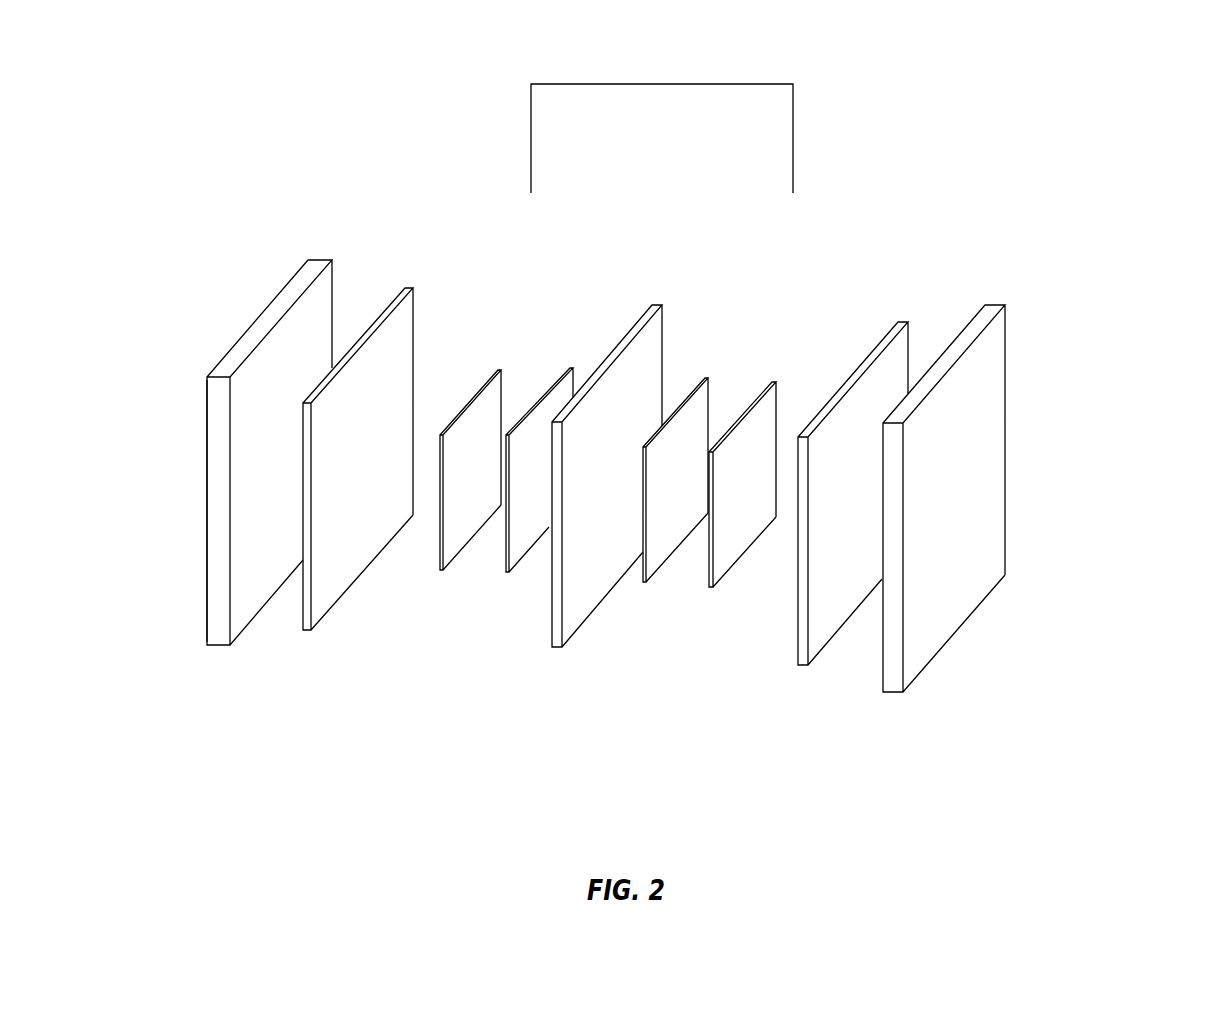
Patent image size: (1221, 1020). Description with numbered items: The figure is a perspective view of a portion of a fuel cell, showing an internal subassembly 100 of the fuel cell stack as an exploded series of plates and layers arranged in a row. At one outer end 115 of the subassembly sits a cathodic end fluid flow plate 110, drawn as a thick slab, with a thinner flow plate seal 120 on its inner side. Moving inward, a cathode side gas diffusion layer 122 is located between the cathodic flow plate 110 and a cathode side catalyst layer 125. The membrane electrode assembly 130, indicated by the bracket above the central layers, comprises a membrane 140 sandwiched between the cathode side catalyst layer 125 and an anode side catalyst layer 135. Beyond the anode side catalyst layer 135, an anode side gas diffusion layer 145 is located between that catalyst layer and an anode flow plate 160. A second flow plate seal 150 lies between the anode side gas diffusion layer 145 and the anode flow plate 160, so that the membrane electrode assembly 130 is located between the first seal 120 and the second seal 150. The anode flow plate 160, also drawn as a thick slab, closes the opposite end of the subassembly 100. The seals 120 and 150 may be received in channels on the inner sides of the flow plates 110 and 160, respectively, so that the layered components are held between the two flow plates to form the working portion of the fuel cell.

The internal subassembly 100 is at (1073, 616).
The cathodic end fluid flow plate 110 is at (267, 320).
The outer end 115 is at (207, 516).
The flow plate seal 120 is at (316, 609).
The cathode side gas diffusion layer 122 is at (495, 387).
The cathode side catalyst layer 125 is at (520, 560).
The membrane electrode assembly 130 is at (653, 84).
The anode side catalyst layer 135 is at (652, 570).
The membrane 140 is at (568, 622).
The anode side gas diffusion layer 145 is at (723, 572).
The second flow plate seal 150 is at (867, 400).
The anode flow plate 160 is at (972, 515).